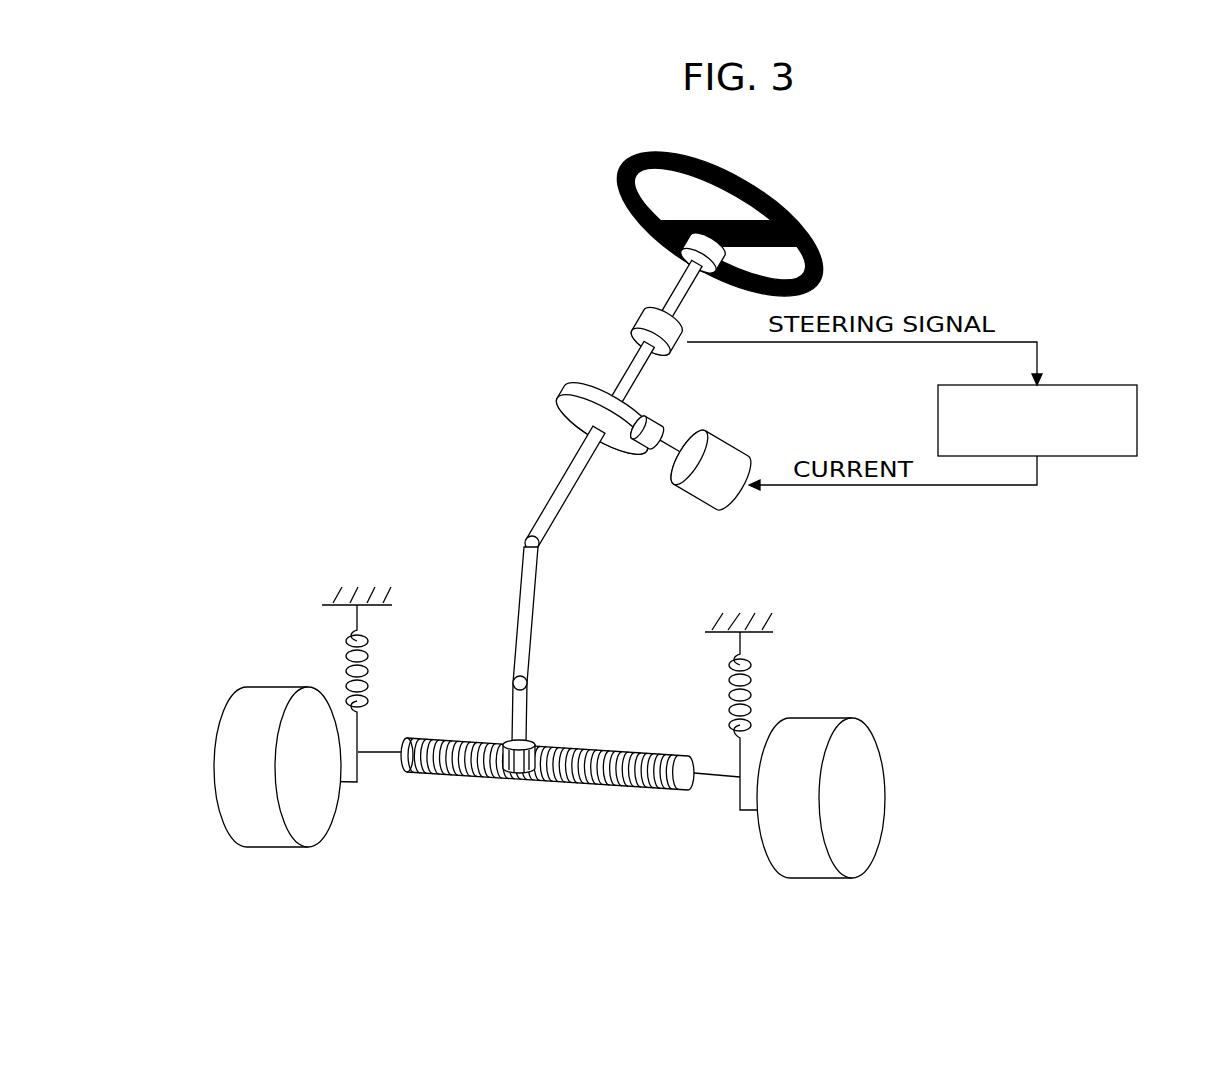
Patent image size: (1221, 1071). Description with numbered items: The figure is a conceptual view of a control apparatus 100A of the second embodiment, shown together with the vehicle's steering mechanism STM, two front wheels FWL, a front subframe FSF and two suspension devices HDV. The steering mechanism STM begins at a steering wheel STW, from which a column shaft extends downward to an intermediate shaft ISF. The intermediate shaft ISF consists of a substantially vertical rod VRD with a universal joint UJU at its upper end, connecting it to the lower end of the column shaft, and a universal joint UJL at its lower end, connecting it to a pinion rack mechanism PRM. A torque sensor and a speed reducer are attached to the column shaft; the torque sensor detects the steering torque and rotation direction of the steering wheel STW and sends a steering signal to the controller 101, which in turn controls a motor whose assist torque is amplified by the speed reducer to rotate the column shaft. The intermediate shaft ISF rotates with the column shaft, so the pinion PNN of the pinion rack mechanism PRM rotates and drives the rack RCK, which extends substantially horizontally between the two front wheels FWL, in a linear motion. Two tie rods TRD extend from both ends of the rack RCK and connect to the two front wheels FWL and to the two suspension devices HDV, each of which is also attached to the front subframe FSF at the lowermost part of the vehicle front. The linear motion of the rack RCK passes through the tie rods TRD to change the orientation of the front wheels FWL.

The steering wheel STW is at (767, 190).
The steering mechanism STM is at (413, 512).
The universal joint UJU is at (528, 538).
The vertical rod VRD is at (518, 612).
The intermediate shaft ISF is at (538, 590).
The universal joint UJL is at (528, 683).
The rack RCK is at (577, 750).
The pinion PNN is at (497, 763).
The pinion rack mechanism PRM is at (555, 785).
The tie rods TRD is at (345, 785).
The suspension devices HDV is at (345, 657).
The front subframe FSF is at (752, 633).
The front wheels FWL is at (222, 753).
The controller 101 is at (1072, 385).
The control apparatus 100A is at (1126, 275).